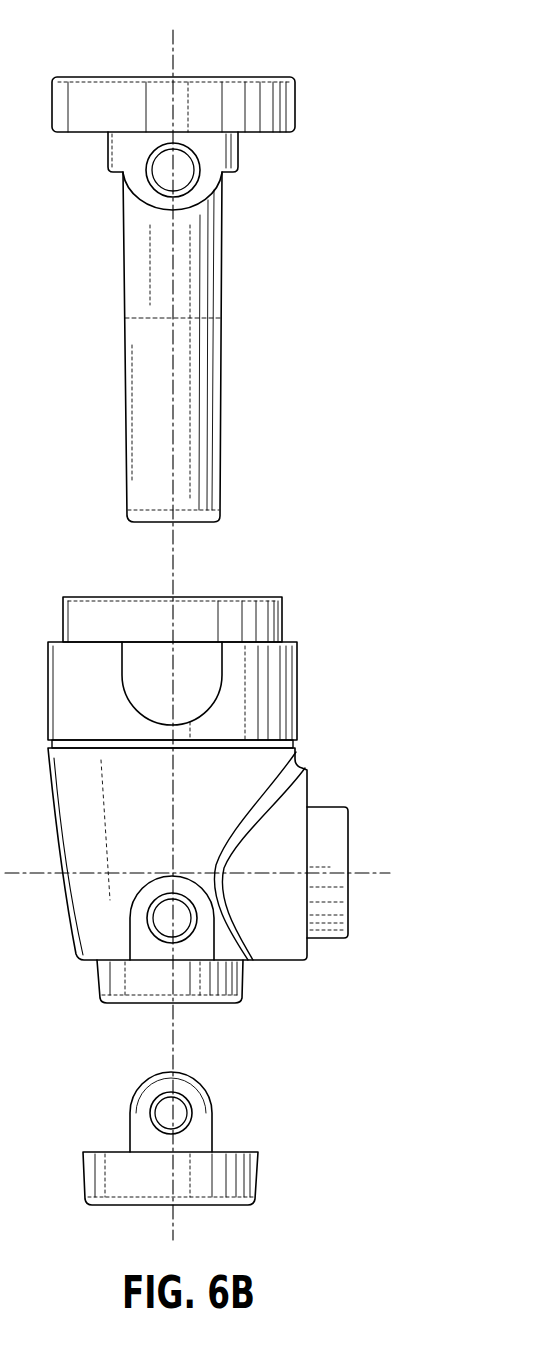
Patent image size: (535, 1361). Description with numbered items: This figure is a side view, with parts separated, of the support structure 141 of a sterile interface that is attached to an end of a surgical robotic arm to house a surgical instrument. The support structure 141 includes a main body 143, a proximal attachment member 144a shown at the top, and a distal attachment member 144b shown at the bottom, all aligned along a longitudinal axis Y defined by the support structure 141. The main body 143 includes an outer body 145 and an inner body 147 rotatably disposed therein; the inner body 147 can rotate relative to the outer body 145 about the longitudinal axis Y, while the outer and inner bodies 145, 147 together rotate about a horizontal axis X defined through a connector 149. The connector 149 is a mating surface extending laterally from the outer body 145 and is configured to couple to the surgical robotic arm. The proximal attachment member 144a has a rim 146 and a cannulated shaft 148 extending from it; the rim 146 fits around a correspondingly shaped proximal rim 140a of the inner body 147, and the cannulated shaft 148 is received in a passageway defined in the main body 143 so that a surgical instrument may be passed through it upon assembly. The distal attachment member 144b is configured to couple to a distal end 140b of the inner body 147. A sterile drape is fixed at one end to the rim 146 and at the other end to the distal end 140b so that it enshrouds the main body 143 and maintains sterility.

The support structure 141 is at (224, 624).
The main body 143 is at (246, 873).
The proximal attachment member 144a is at (211, 290).
The distal attachment member 144b is at (272, 1151).
The outer body 145 is at (280, 786).
The rim 146 is at (296, 97).
The inner body 147 is at (287, 622).
The cannulated shaft 148 is at (223, 350).
The connector 149 is at (331, 830).
The proximal rim 140a is at (212, 650).
The distal end 140b is at (245, 975).